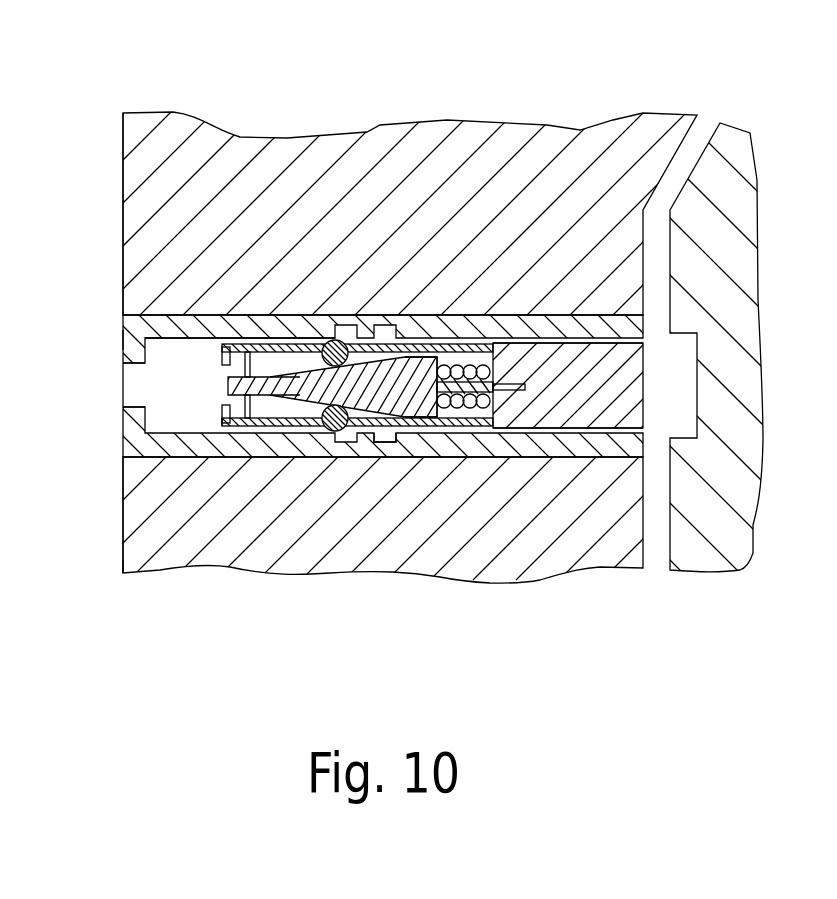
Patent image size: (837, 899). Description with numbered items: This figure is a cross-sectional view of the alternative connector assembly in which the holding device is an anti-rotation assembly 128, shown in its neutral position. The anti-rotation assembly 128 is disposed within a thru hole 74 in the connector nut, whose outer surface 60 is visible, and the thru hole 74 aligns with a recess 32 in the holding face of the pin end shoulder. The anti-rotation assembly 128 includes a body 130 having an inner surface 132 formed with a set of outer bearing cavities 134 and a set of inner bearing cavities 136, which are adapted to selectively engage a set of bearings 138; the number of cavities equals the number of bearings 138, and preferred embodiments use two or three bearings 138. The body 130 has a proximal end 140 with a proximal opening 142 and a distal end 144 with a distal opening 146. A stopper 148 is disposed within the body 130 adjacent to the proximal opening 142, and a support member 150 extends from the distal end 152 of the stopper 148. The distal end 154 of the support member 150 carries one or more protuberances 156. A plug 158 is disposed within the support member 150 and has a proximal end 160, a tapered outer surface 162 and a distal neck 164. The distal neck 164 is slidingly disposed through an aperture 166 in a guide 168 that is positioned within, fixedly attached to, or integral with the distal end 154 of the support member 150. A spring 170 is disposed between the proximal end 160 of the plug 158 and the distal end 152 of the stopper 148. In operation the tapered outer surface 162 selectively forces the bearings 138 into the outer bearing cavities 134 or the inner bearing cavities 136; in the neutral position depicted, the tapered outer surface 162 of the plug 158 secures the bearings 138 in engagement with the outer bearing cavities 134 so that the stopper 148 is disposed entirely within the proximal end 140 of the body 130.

The recess 32 is at (694, 422).
The outer surface 60 is at (123, 526).
The thru hole 74 is at (153, 445).
The anti-rotation assembly 128 is at (112, 340).
The body 130 is at (258, 343).
The inner surface 132 is at (210, 425).
The outer bearing cavities 134 is at (347, 428).
The inner bearing cavities 136 is at (397, 433).
The bearings 138 is at (333, 340).
The proximal end 140 is at (625, 323).
The proximal opening 142 is at (647, 340).
The distal end 144 is at (124, 424).
The distal opening 146 is at (130, 365).
The stopper 148 is at (645, 362).
The support member 150 is at (442, 430).
The distal end 152 is at (493, 343).
The distal end 154 is at (245, 350).
The protuberances 156 is at (225, 358).
The plug 158 is at (430, 355).
The proximal end 160 is at (500, 343).
The tapered outer surface 162 is at (318, 420).
The distal neck 164 is at (228, 386).
The aperture 166 is at (123, 566).
The guide 168 is at (254, 338).
The spring 170 is at (486, 428).